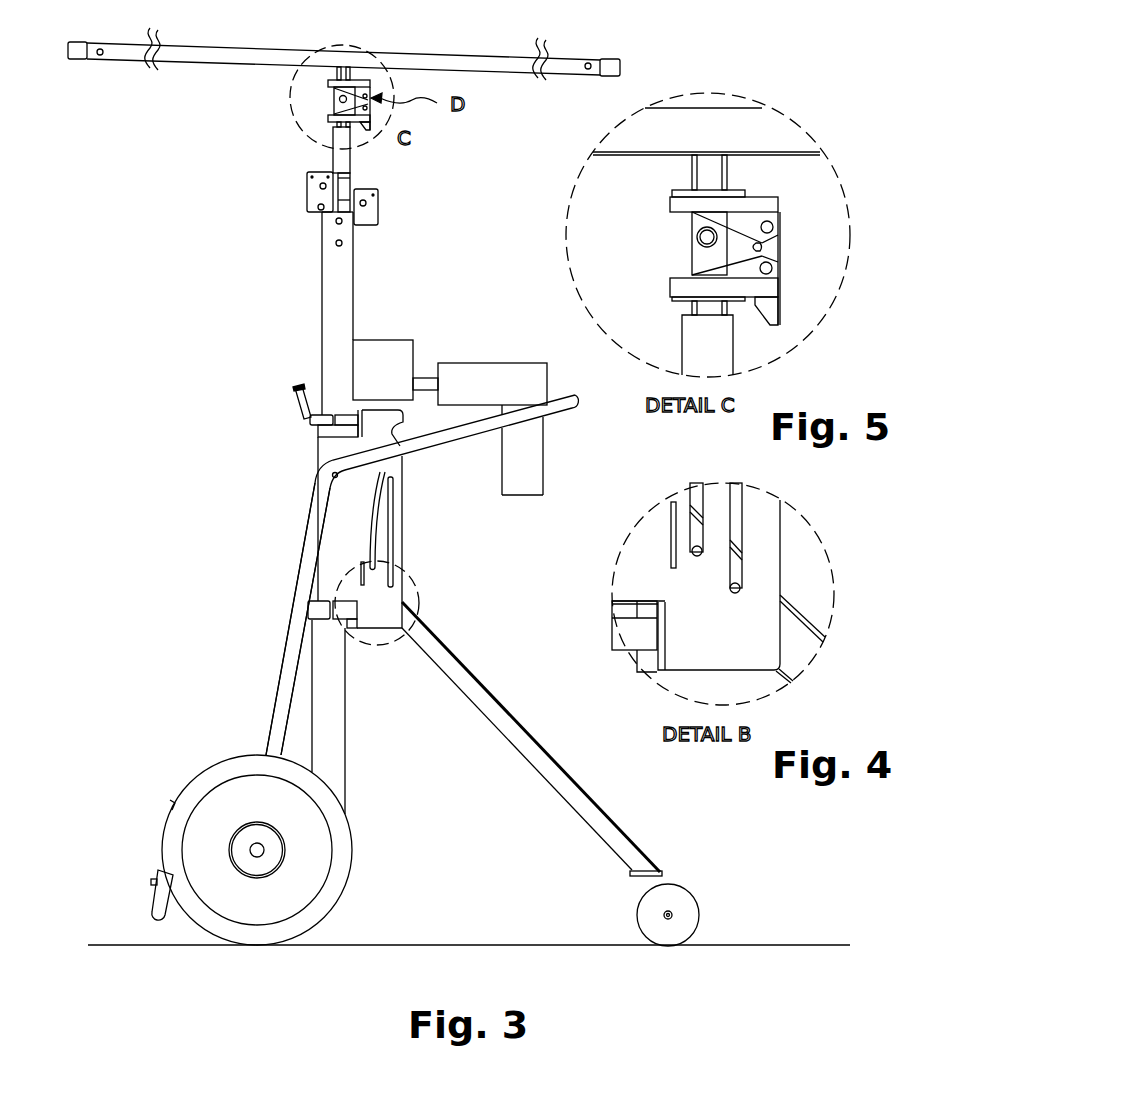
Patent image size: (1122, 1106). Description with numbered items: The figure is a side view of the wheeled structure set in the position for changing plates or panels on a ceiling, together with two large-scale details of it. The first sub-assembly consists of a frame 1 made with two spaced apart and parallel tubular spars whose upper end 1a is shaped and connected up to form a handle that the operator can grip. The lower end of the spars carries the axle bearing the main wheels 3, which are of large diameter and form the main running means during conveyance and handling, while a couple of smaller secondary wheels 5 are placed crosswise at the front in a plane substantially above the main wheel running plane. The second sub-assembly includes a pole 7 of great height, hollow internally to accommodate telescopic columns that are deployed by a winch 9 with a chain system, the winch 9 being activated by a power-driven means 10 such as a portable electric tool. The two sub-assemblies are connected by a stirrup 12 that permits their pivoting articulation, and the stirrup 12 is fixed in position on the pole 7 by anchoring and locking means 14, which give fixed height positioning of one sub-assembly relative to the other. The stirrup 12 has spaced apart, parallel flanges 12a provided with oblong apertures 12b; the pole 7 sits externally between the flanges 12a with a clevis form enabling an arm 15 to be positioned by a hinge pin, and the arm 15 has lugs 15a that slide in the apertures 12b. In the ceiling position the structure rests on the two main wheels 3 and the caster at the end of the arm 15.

In FIG. 3, the frame 1 is at (298, 630).
In FIG. 3, the upper end 1a is at (567, 403).
In FIG. 3, the main wheels 3 is at (315, 858).
In FIG. 3, the secondary wheels 5 is at (162, 900).
In FIG. 3, the pole 7 is at (342, 293).
In FIG. 3, the winch 9 is at (397, 350).
In FIG. 3, the power-driven means 10 is at (490, 377).
In FIG. 3, the stirrup 12 is at (395, 515).
In FIG. 4, the stirrup 12 is at (755, 552).
In FIG. 4, the flanges 12a is at (752, 652).
In FIG. 4, the oblong apertures 12b is at (742, 522).
In FIG. 3, the anchoring and locking means 14 is at (297, 403).
In FIG. 4, the anchoring and locking means 14 is at (627, 634).
In FIG. 3, the arm 15 is at (548, 757).
In FIG. 4, the lugs 15a is at (692, 552).